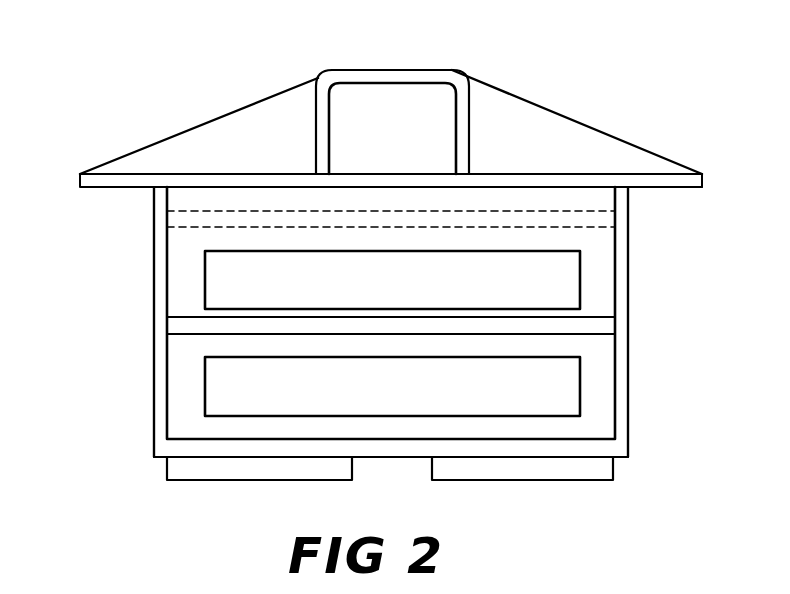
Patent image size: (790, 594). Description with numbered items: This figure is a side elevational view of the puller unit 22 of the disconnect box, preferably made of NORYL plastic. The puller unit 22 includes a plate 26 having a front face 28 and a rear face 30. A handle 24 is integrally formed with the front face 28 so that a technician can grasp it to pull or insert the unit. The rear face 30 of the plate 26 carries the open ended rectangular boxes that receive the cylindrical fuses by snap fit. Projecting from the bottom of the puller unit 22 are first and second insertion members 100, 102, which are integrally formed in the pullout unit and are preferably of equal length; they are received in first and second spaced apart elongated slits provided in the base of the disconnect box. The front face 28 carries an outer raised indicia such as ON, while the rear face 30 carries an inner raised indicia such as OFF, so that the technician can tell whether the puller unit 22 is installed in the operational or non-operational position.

The puller unit 22 is at (574, 84).
The handle 24 is at (338, 72).
The plate 26 is at (80, 181).
The front face 28 is at (600, 175).
The rear face 30 is at (663, 189).
The first insertion member 100 is at (280, 481).
The second insertion member 102 is at (512, 481).